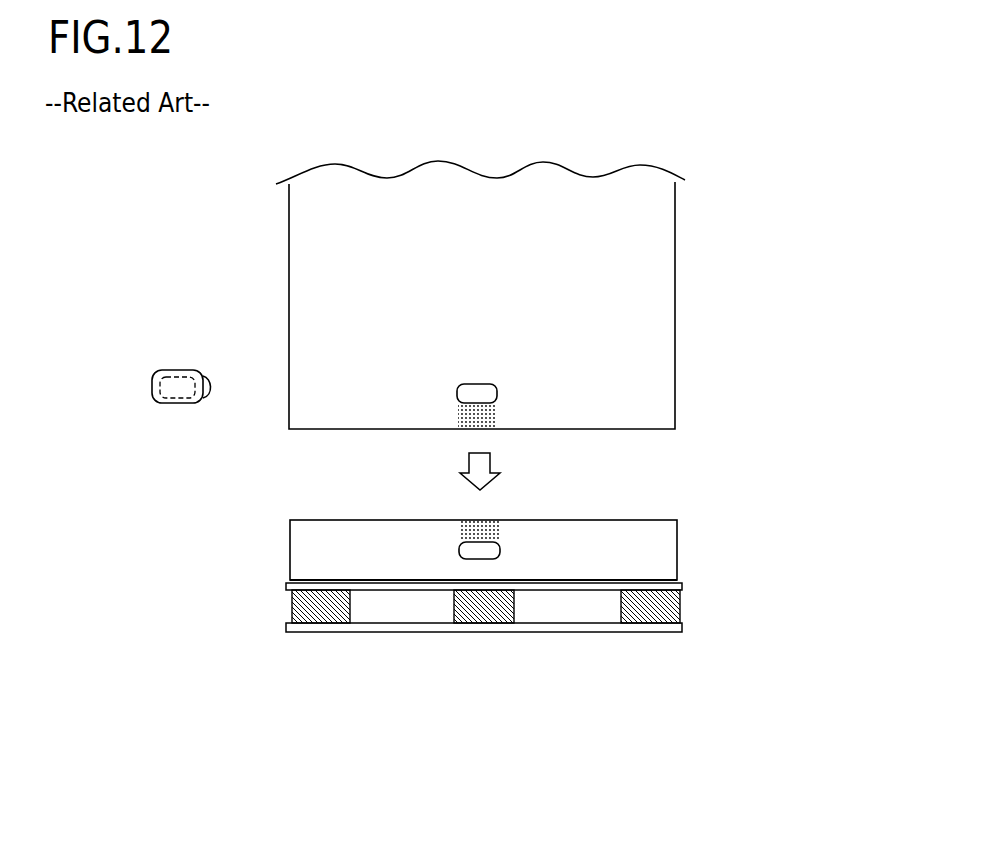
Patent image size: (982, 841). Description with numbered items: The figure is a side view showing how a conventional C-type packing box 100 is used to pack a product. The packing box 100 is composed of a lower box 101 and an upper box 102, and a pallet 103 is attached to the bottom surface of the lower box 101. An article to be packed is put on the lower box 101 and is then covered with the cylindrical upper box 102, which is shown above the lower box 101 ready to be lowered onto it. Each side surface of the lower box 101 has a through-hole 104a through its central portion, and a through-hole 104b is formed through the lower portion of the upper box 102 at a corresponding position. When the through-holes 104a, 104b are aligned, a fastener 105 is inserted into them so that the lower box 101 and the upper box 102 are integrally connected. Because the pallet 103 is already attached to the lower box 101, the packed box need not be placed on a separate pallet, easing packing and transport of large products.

The packing box 100 is at (577, 370).
The lower box 101 is at (697, 543).
The upper box 102 is at (678, 335).
The pallet 103 is at (392, 633).
The through-hole 104a is at (505, 546).
The through-hole 104b is at (452, 399).
The fastener 105 is at (178, 362).